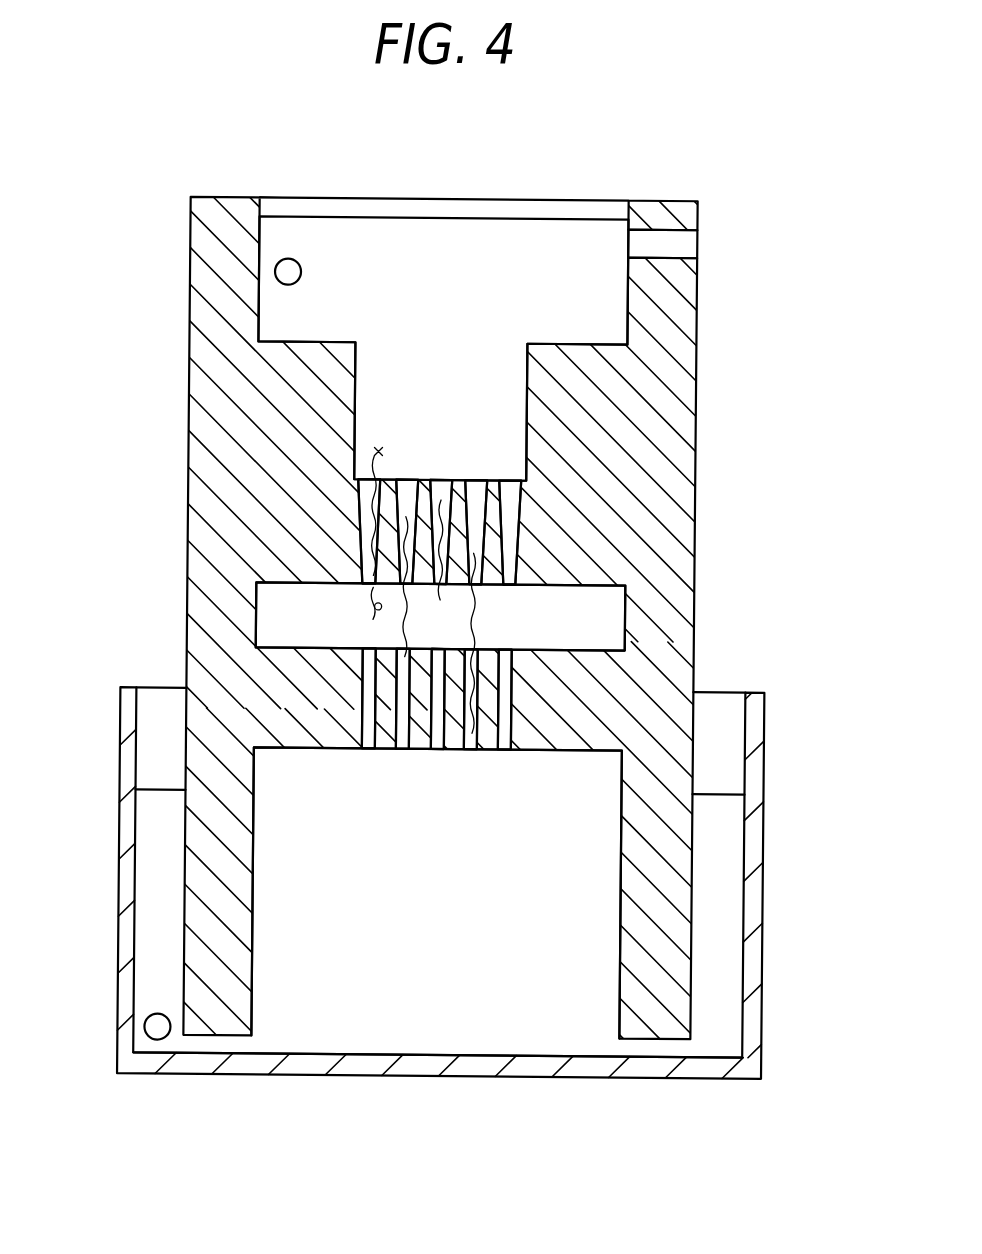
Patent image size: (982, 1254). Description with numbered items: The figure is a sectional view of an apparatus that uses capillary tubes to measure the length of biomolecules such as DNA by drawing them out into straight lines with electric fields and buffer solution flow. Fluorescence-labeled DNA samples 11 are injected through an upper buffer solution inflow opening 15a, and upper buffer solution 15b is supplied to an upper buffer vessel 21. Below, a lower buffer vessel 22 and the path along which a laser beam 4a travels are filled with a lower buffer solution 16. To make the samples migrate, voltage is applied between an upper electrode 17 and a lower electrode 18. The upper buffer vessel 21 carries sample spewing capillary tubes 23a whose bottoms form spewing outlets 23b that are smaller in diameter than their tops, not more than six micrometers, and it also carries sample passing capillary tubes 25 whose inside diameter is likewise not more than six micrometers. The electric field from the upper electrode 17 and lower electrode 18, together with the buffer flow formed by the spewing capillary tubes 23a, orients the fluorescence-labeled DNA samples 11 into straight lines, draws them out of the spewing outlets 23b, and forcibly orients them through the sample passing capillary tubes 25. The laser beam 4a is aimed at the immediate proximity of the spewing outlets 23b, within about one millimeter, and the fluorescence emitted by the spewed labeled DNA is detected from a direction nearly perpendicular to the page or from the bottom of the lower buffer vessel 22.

The laser beam 4a is at (303, 616).
The fluorescence-labeled DNA samples 11 is at (407, 622).
The upper buffer solution inflow opening 15a is at (603, 243).
The upper buffer solution 15b is at (494, 262).
The lower buffer solution 16 is at (324, 1036).
The upper electrode 17 is at (290, 262).
The lower electrode 18 is at (157, 1029).
The upper buffer vessel 21 is at (676, 424).
The lower buffer vessel 22 is at (750, 847).
The sample spewing capillary tubes 23a is at (510, 511).
The spewing outlets 23b is at (507, 592).
The sample passing capillary tubes 25 is at (367, 702).